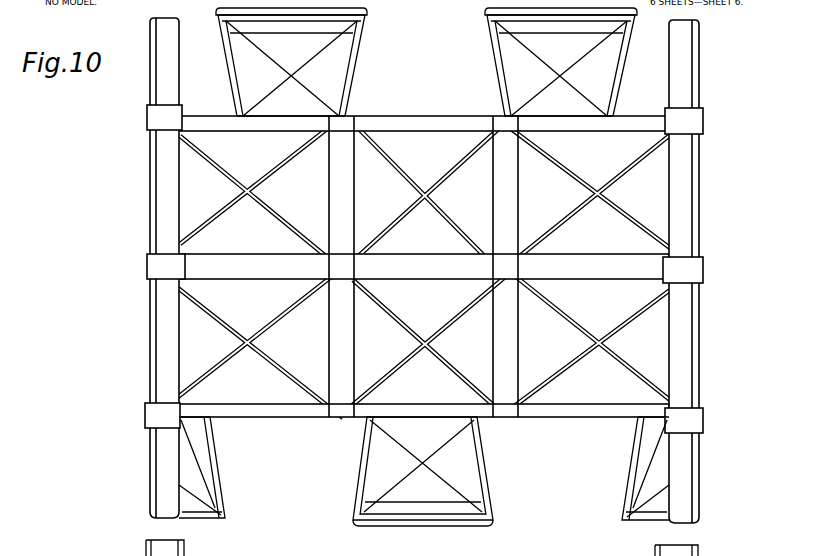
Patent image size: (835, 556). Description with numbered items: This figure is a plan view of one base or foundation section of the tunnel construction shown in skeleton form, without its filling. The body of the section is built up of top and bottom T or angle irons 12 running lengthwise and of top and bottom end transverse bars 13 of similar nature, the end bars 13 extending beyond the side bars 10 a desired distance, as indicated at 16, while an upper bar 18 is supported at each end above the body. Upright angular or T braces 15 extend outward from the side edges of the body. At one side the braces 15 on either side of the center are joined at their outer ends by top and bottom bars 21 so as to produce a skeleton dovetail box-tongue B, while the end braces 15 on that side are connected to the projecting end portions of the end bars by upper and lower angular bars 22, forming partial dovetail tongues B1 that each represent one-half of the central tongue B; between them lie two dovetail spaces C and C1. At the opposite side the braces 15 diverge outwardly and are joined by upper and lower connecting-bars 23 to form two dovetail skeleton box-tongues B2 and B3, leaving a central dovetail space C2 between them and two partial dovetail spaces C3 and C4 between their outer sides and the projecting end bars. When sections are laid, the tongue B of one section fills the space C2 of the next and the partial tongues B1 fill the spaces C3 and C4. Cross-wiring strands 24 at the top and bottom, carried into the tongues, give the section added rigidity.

The side bar 10 is at (433, 131).
The top and bottom T or angle irons 12 is at (329, 336).
The end transverse bars 13 is at (150, 332).
The upright angular or T braces 15 is at (237, 99).
The projecting end portion 16 is at (150, 92).
The upper bar 18 is at (152, 540).
The top and bottom bars 21 is at (400, 508).
The upper and lower angular bars 22 is at (176, 508).
The upper and lower connecting-bars 23 is at (308, 27).
The cross-wiring strands 24 is at (243, 182).
The skeleton dovetail box-tongue B is at (423, 468).
The partial dovetail box-tongue B1 is at (185, 500).
The dovetail skeleton box-tongue B2 is at (340, 52).
The dovetail skeleton box-tongue B3 is at (600, 72).
The dovetail space C is at (558, 488).
The dovetail space C1 is at (294, 468).
The central dovetail space C2 is at (437, 52).
The partial dovetail space C3 is at (202, 44).
The partial dovetail space C4 is at (651, 26).